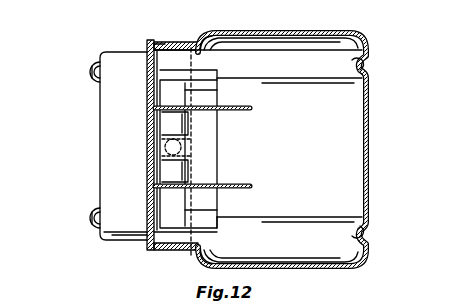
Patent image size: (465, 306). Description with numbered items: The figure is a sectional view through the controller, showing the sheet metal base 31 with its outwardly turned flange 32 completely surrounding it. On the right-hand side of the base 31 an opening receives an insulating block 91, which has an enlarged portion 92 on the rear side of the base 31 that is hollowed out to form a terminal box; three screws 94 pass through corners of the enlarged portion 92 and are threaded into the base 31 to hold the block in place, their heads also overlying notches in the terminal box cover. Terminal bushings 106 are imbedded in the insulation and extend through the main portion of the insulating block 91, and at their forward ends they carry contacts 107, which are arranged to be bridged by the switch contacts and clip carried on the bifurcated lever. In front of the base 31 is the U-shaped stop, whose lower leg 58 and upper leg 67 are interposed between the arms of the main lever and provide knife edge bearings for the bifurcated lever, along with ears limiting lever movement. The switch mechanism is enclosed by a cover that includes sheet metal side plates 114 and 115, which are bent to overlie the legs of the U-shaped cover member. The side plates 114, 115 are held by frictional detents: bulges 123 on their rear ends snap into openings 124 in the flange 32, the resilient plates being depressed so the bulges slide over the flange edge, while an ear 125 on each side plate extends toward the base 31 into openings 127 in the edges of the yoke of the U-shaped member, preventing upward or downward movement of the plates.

The base 31 is at (147, 104).
The flange 32 is at (202, 42).
The lower leg of stop 58 is at (258, 188).
The leg of stop 67 is at (252, 110).
The insulating block 91 is at (218, 72).
The enlarged portion 92 is at (107, 163).
The screws 94 is at (88, 67).
The terminal bushings 106 is at (218, 90).
The contacts 107 is at (189, 116).
The side plate 114 is at (288, 33).
The side plate 115 is at (338, 268).
The bulges 123 is at (175, 42).
The openings 124 is at (168, 44).
The ear 125 is at (357, 78).
The openings 127 is at (370, 62).